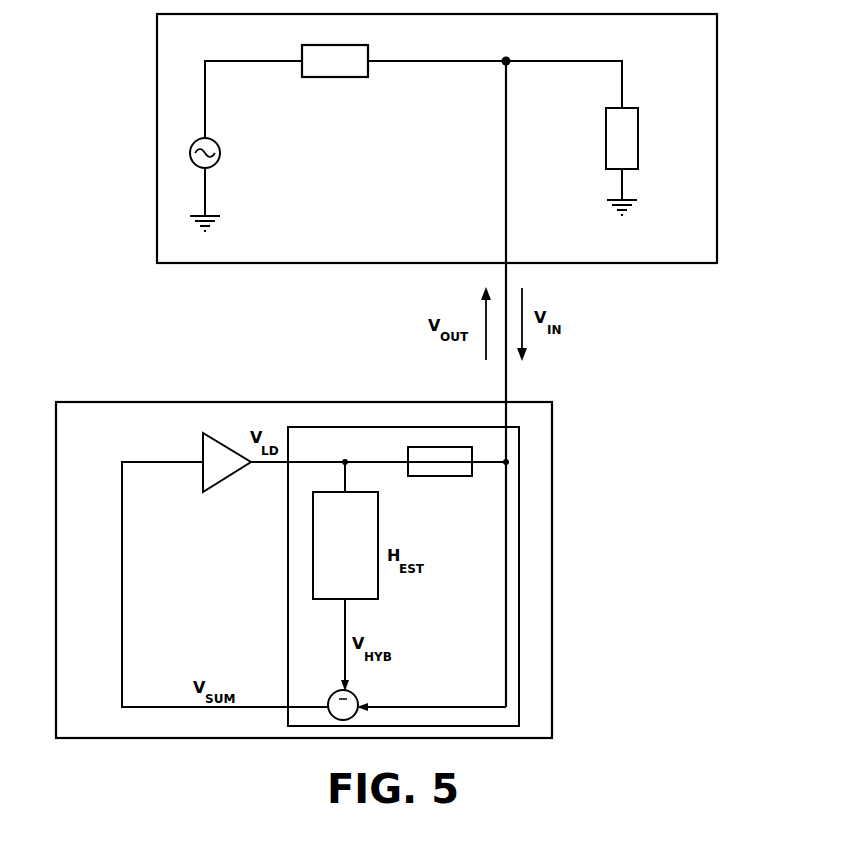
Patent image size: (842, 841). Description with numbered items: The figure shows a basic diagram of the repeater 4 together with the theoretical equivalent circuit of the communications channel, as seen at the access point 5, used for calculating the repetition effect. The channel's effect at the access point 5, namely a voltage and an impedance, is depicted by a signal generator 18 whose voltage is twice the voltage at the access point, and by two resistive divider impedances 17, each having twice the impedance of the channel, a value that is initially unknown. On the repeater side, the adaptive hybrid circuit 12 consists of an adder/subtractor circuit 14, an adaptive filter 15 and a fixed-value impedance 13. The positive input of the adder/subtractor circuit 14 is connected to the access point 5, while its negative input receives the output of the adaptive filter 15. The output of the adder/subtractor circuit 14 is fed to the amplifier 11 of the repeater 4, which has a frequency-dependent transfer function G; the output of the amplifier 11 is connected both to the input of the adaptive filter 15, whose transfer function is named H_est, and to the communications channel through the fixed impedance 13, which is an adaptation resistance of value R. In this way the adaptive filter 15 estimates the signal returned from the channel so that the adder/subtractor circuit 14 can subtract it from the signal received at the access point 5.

The repeater 4 is at (315, 570).
The access point 5 is at (507, 49).
The amplifier 11 is at (223, 453).
The adaptive hybrid circuit 12 is at (403, 564).
The fixed-value impedance 13 is at (440, 472).
The adder/subtractor circuit 14 is at (401, 699).
The adaptive filter 15 is at (345, 576).
The resistive divider impedances 17 is at (470, 130).
The signal generator 18 is at (246, 146).